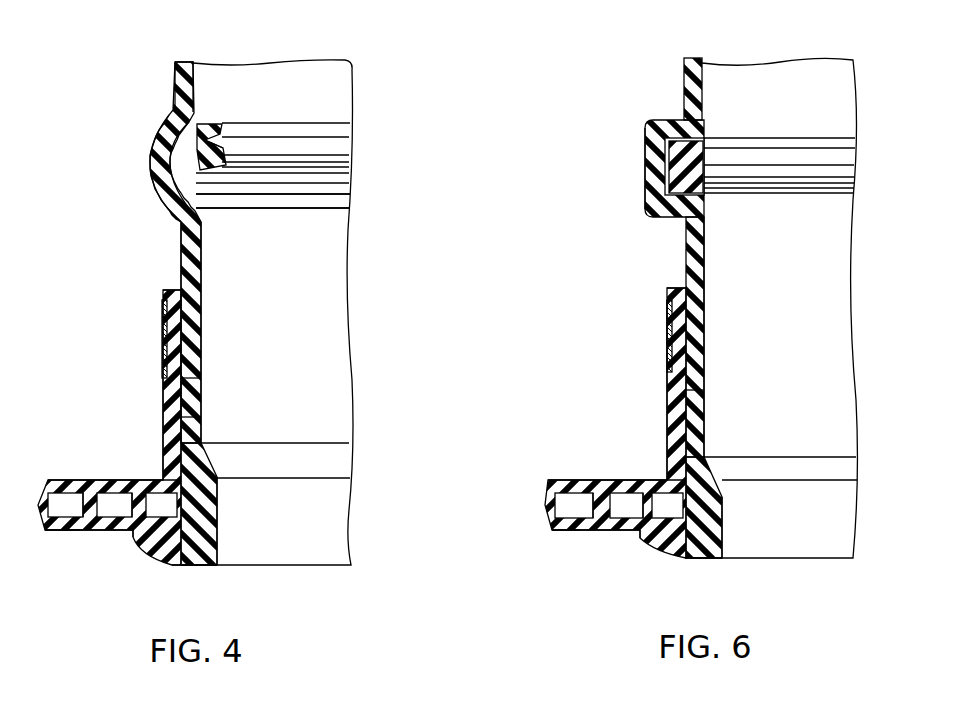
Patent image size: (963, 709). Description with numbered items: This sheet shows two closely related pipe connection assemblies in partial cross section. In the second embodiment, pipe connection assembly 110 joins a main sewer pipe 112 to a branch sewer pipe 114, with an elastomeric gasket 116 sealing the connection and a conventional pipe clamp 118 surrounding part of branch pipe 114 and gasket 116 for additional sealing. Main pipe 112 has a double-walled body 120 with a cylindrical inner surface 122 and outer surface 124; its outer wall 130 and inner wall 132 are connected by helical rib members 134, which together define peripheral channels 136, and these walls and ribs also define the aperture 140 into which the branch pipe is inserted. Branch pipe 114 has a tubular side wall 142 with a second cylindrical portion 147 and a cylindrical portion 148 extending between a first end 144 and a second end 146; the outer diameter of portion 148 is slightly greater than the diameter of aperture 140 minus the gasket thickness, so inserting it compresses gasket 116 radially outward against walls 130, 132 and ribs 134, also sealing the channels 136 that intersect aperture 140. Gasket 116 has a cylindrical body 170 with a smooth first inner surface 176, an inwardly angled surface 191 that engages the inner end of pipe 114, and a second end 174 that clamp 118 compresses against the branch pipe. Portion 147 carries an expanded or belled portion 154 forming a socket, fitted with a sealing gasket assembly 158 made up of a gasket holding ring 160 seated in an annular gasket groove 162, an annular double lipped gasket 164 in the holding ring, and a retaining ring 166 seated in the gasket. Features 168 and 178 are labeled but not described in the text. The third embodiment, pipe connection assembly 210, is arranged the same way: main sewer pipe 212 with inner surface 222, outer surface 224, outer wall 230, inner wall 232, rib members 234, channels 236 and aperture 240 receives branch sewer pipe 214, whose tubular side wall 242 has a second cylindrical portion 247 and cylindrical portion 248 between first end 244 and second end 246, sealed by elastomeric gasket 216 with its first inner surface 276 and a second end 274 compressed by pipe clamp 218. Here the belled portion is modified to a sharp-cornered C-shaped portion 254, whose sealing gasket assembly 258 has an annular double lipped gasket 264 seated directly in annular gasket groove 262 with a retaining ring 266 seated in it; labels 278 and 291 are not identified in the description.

In FIG. 4, the pipe connection assembly 110 is at (110, 385).
In FIG. 4, the main sewer pipe 112 is at (87, 473).
In FIG. 4, the branch sewer pipe 114 is at (178, 233).
In FIG. 4, the elastomeric gasket 116 is at (160, 413).
In FIG. 4, the pipe clamp 118 is at (165, 327).
In FIG. 4, the double-walled body 120 is at (110, 480).
In FIG. 4, the inner surface 122 is at (62, 533).
In FIG. 4, the outer surface 124 is at (75, 480).
In FIG. 4, the outer wall 130 is at (138, 487).
In FIG. 4, the inner wall 132 is at (70, 530).
In FIG. 4, the rib members 134 is at (132, 508).
In FIG. 4, the peripheral channels 136 is at (120, 500).
In FIG. 4, the aperture 140 is at (203, 472).
In FIG. 4, the tubular side wall 142 is at (180, 250).
In FIG. 4, the first end 144 is at (213, 570).
In FIG. 4, the second end 146 is at (170, 80).
In FIG. 4, the second cylindrical portion 147 is at (202, 330).
In FIG. 4, the cylindrical portion 148 is at (220, 517).
In FIG. 4, the expanded or belled portion 154 is at (142, 175).
In FIG. 4, the sealing gasket assembly 158 is at (208, 112).
In FIG. 4, the gasket holding ring 160 is at (190, 183).
In FIG. 4, the annular gasket groove 162 is at (192, 205).
In FIG. 4, the annular double lipped gasket 164 is at (198, 133).
In FIG. 4, the retaining ring 166 is at (218, 157).
In FIG. 4, the groove 168 is at (162, 168).
In FIG. 4, the cylindrical body 170 is at (157, 390).
In FIG. 4, the second end 174 is at (148, 307).
In FIG. 4, the first inner surface 176 is at (183, 378).
In FIG. 4, the inner surface 178 is at (183, 417).
In FIG. 4, the inwardly angled surface 191 is at (198, 567).
In FIG. 6, the pipe connection assembly 210 is at (618, 367).
In FIG. 6, the main sewer pipe 212 is at (585, 475).
In FIG. 6, the branch sewer pipe 214 is at (708, 268).
In FIG. 6, the elastomeric gasket 216 is at (667, 415).
In FIG. 6, the pipe clamp 218 is at (667, 337).
In FIG. 6, the inner surface 222 is at (558, 532).
In FIG. 6, the outer surface 224 is at (563, 480).
In FIG. 6, the outer wall 230 is at (625, 480).
In FIG. 6, the inner wall 232 is at (623, 498).
In FIG. 6, the rib members 234 is at (638, 510).
In FIG. 6, the peripheral channels 236 is at (570, 500).
In FIG. 6, the aperture 240 is at (717, 508).
In FIG. 6, the tubular side wall 242 is at (683, 260).
In FIG. 6, the first end 244 is at (727, 568).
In FIG. 6, the second end 246 is at (675, 85).
In FIG. 6, the second cylindrical portion 247 is at (710, 335).
In FIG. 6, the cylindrical portion 248 is at (723, 530).
In FIG. 6, the C-shaped portion 254 is at (643, 167).
In FIG. 6, the sealing gasket assembly 258 is at (712, 120).
In FIG. 6, the annular gasket groove 262 is at (653, 123).
In FIG. 6, the annular double lipped gasket 264 is at (697, 193).
In FIG. 6, the retaining ring 266 is at (698, 153).
In FIG. 6, the second end 274 is at (658, 298).
In FIG. 6, the first inner surface 276 is at (690, 390).
In FIG. 6, the inner surface 278 is at (667, 443).
In FIG. 6, the bottom face 291 is at (710, 567).